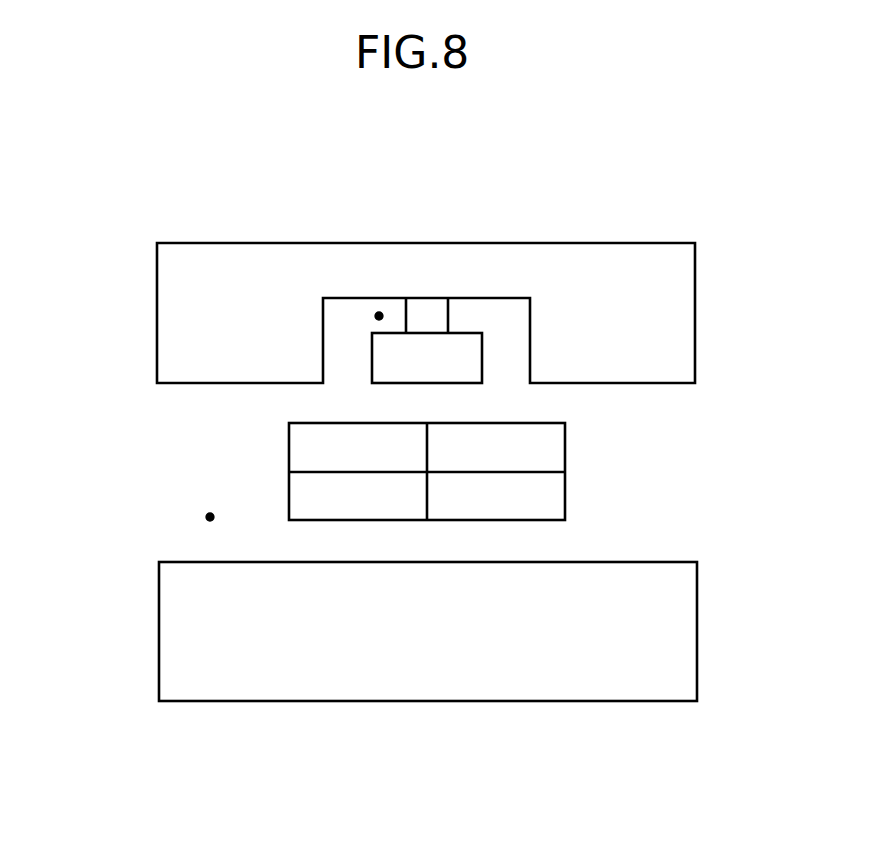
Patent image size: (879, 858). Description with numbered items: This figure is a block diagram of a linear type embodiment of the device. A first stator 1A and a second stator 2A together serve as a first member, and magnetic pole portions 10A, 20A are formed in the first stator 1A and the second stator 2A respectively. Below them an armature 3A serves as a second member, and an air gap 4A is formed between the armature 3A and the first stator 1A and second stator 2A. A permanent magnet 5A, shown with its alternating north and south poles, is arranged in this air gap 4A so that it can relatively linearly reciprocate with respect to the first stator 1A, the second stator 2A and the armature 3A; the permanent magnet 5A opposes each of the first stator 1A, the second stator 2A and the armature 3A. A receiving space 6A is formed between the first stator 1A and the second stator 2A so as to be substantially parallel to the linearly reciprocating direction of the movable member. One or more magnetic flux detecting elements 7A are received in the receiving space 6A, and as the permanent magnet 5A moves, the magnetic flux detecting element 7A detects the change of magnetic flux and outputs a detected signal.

The first stator 1A is at (477, 347).
The second stator 2A is at (618, 258).
The armature 3A is at (443, 687).
The air gap 4A is at (210, 517).
The permanent magnet 5A is at (565, 472).
The receiving space 6A is at (379, 316).
The magnetic flux detecting element 7A is at (428, 307).
The magnetic pole portion 10A is at (403, 383).
The magnetic pole portion 20A is at (627, 383).